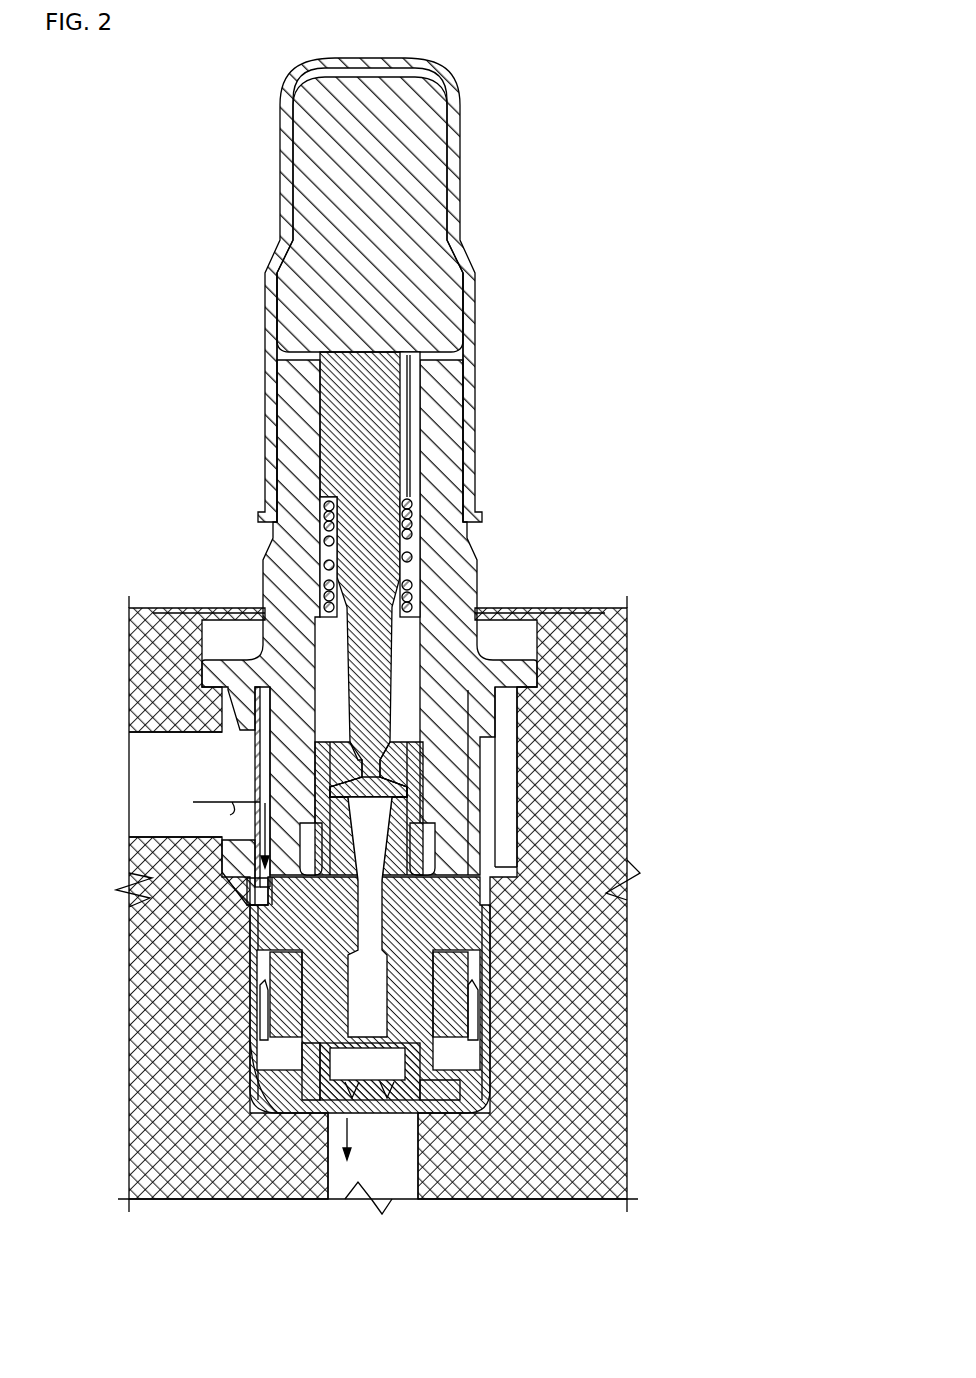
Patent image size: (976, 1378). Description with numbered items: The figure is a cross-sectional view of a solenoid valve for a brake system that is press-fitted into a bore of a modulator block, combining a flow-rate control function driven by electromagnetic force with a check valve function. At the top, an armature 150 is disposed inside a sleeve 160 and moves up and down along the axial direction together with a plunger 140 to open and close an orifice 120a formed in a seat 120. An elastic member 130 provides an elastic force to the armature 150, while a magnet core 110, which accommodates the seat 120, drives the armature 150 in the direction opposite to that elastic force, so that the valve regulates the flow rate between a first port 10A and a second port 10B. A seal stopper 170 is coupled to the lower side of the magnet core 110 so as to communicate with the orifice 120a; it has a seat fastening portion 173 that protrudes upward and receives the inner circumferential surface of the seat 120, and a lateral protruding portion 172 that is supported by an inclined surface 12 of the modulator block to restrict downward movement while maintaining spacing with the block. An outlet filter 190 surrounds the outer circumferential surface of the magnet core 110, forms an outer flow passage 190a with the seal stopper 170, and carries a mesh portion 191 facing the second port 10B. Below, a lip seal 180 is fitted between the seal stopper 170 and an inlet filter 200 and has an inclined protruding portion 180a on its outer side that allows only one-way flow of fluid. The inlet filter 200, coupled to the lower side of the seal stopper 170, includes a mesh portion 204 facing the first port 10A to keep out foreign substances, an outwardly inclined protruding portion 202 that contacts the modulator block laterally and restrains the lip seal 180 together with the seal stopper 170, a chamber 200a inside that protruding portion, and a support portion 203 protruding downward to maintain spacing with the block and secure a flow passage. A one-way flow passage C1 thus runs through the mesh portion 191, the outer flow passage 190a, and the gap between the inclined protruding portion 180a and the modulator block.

The inclined surface 12 is at (497, 905).
The armature 150 is at (438, 202).
The sleeve 160 is at (472, 380).
The magnet core 110 is at (442, 492).
The plunger 140 is at (390, 440).
The elastic member 130 is at (413, 553).
The seat fastening portion 173 is at (400, 750).
The orifice 120a is at (395, 772).
The seat 120 is at (400, 795).
The outlet filter 190 is at (505, 862).
The mesh portion 191 is at (257, 743).
The one-way flow passage C1 is at (223, 818).
The second port 10B is at (162, 780).
The lateral protruding portion 172 is at (250, 933).
The outer flow passage 190a is at (250, 887).
The seal stopper 170 is at (490, 933).
The lip seal 180 is at (445, 1015).
The inclined protruding portion 180a is at (475, 1000).
The inlet filter 200 is at (430, 1065).
The chamber 200a is at (295, 1052).
The protruding portion 202 is at (300, 1065).
The mesh portion 204 is at (378, 1120).
The support portion 203 is at (440, 1110).
The first port 10A is at (372, 1155).